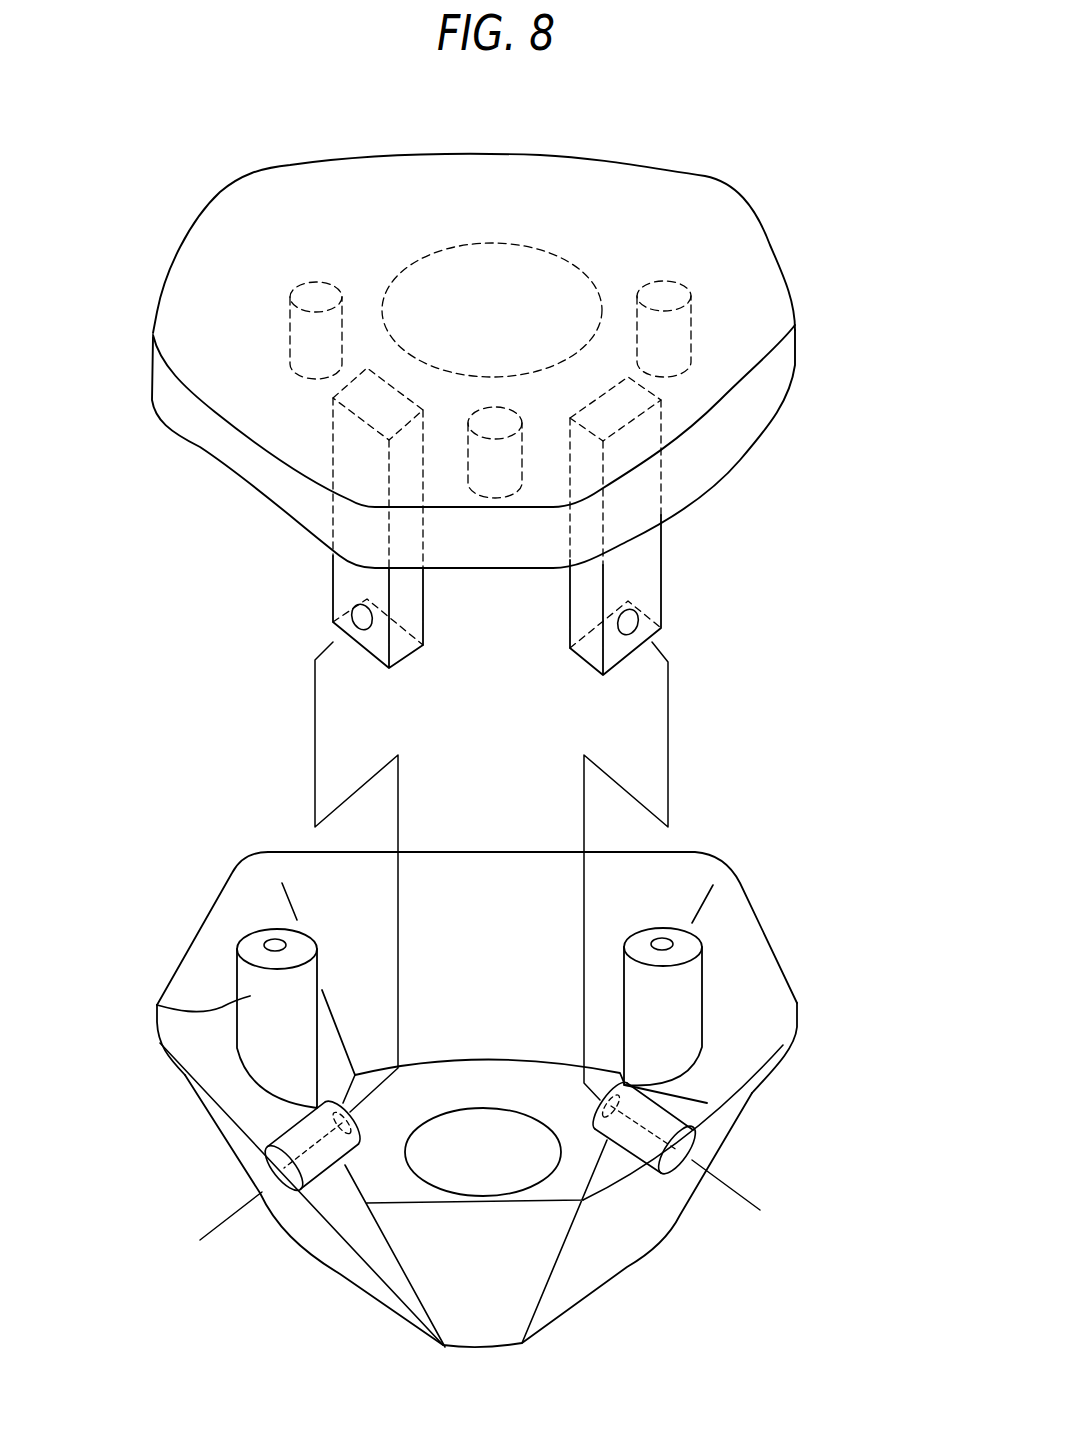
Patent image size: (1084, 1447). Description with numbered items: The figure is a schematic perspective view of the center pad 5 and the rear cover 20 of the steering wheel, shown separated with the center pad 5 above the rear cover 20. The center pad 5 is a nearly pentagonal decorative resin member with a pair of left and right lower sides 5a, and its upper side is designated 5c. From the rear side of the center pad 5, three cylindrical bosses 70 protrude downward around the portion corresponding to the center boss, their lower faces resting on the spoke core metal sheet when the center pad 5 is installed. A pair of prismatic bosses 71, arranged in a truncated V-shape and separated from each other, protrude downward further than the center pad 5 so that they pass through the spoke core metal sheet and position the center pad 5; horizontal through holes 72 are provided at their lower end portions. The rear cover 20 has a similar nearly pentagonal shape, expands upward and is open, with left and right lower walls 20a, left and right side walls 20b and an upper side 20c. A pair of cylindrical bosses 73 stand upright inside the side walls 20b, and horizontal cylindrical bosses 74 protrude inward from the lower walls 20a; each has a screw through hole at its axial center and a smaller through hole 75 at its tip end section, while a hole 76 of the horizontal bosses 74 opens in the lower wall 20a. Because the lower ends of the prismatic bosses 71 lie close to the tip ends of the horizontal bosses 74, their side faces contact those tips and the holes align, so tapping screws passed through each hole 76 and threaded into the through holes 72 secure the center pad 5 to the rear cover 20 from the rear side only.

The center pad 5 is at (730, 172).
The lower sides of the center pad 5a is at (210, 443).
The upper side of the center pad 5c is at (647, 180).
The cylindrical bosses 70 is at (298, 292).
The prismatic bosses 71 is at (343, 580).
The horizontal through holes 72 is at (353, 614).
The rear cover 20 is at (708, 826).
The lower walls of the rear cover 20a is at (353, 1283).
The side walls of the rear cover 20b is at (193, 963).
The upper side of the rear cover 20c is at (508, 865).
The cylindrical bosses 73 is at (157, 1005).
The horizontal cylindrical bosses 74 is at (300, 1122).
The smaller through hole 75 is at (268, 940).
The hole 76 is at (263, 1198).